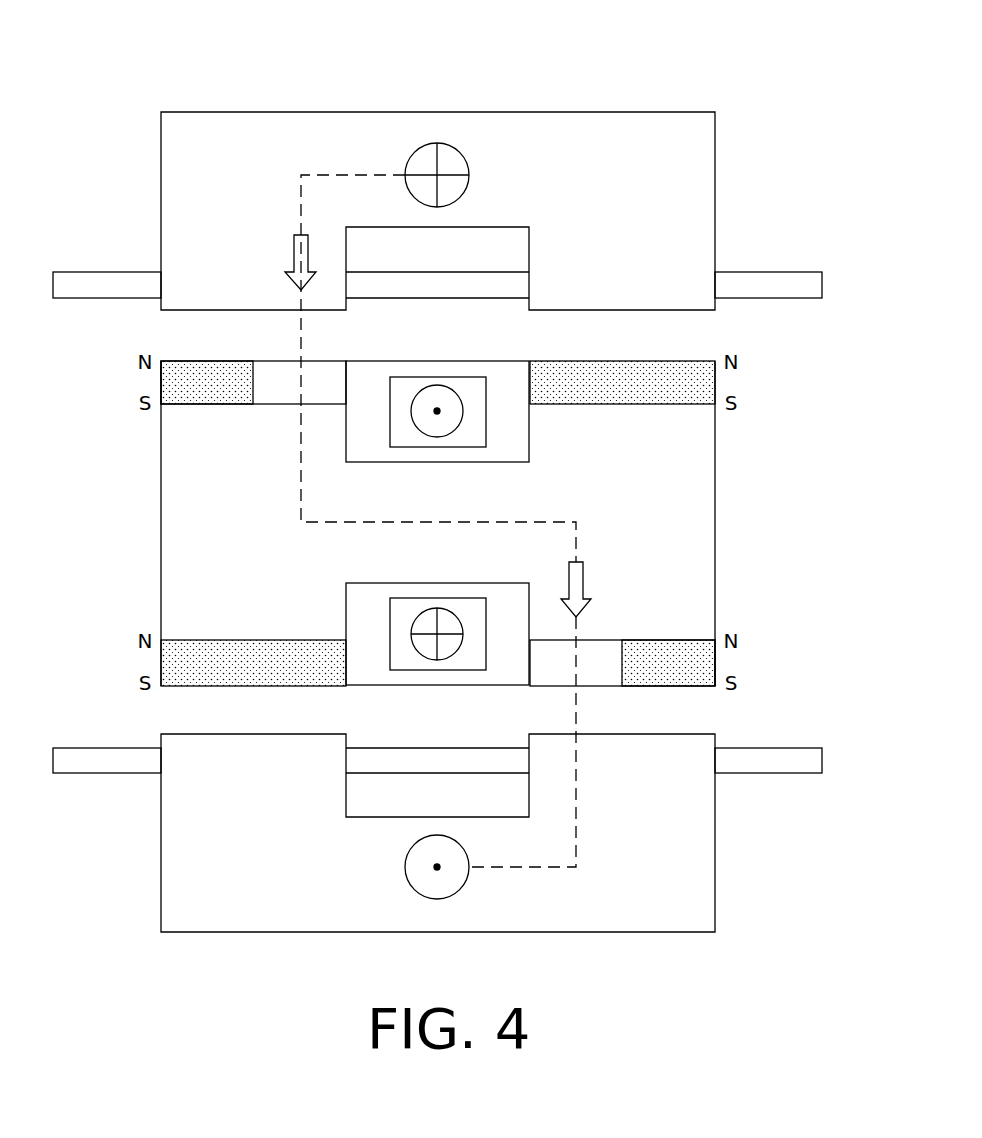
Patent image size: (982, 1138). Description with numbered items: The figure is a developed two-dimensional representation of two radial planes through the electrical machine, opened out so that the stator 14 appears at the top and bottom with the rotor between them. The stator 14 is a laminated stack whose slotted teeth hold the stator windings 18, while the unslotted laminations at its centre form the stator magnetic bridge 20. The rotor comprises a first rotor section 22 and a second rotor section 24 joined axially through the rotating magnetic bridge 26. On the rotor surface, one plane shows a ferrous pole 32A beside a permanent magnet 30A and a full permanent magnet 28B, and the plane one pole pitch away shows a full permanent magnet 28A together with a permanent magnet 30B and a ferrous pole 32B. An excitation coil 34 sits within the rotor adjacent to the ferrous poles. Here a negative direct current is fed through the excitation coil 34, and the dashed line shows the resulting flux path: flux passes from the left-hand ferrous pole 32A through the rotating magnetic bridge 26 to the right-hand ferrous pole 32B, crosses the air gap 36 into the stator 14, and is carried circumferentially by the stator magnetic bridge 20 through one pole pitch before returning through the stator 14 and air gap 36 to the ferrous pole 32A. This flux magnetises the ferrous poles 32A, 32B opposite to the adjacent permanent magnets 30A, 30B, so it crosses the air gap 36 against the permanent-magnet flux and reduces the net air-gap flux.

The stator 14 is at (253, 120).
The stator windings 18 is at (794, 270).
The stator magnetic bridge 20 is at (436, 120).
The first rotor section 22 is at (173, 521).
The second rotor section 24 is at (703, 520).
The rotating magnetic bridge 26 is at (438, 524).
The permanent magnet 28A is at (161, 664).
The permanent magnet 28B is at (715, 380).
The permanent magnet 30A is at (161, 385).
The permanent magnet 30B is at (715, 660).
The ferrous pole 32A is at (348, 372).
The ferrous pole 32B is at (531, 672).
The excitation coil 34 is at (466, 388).
The air gap 36 is at (700, 338).